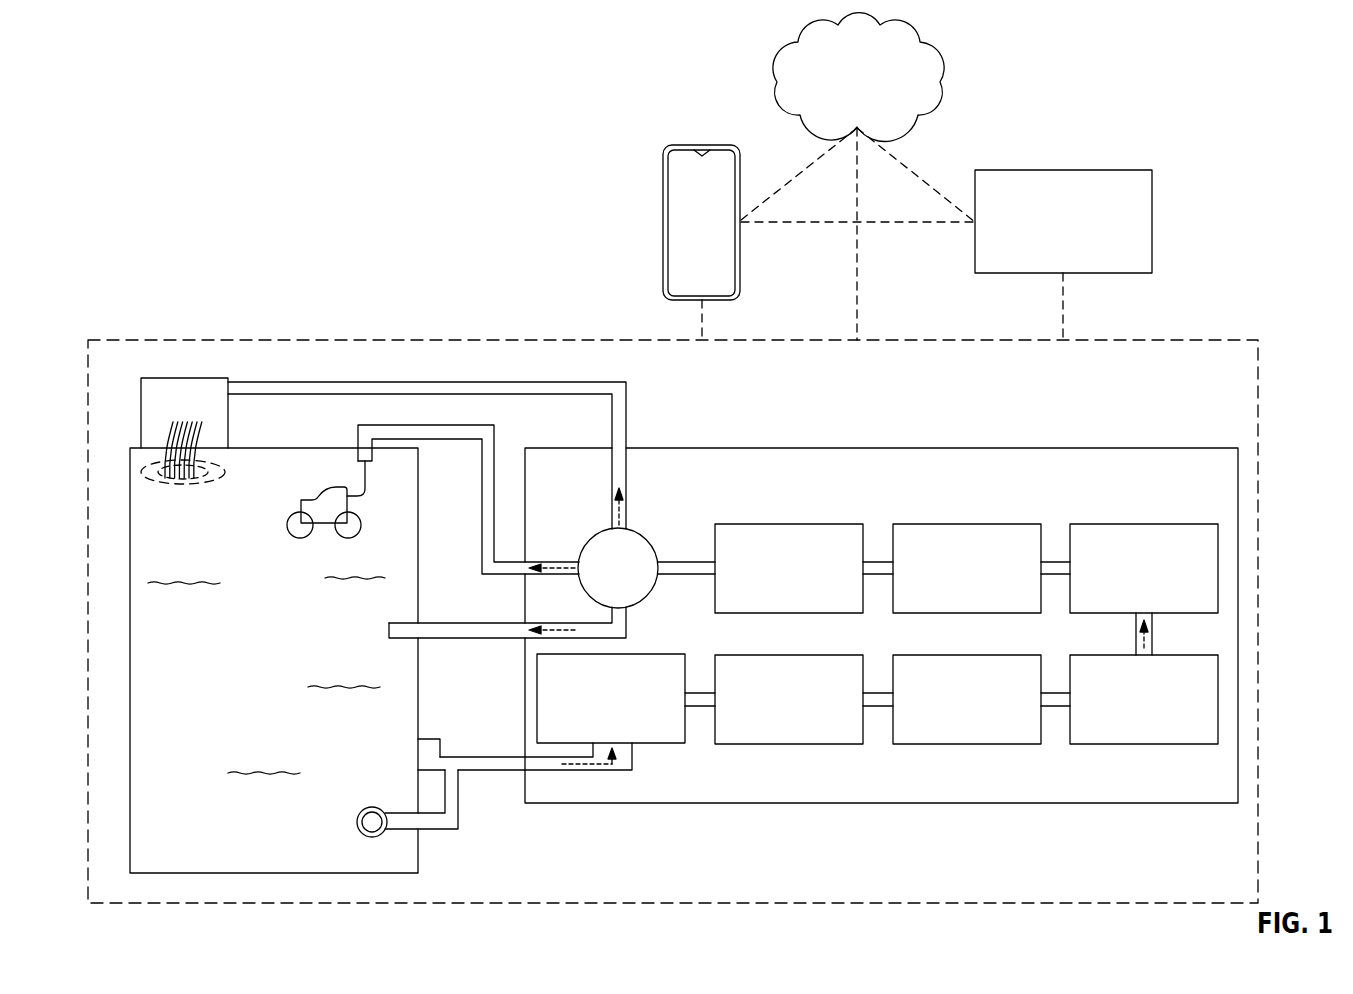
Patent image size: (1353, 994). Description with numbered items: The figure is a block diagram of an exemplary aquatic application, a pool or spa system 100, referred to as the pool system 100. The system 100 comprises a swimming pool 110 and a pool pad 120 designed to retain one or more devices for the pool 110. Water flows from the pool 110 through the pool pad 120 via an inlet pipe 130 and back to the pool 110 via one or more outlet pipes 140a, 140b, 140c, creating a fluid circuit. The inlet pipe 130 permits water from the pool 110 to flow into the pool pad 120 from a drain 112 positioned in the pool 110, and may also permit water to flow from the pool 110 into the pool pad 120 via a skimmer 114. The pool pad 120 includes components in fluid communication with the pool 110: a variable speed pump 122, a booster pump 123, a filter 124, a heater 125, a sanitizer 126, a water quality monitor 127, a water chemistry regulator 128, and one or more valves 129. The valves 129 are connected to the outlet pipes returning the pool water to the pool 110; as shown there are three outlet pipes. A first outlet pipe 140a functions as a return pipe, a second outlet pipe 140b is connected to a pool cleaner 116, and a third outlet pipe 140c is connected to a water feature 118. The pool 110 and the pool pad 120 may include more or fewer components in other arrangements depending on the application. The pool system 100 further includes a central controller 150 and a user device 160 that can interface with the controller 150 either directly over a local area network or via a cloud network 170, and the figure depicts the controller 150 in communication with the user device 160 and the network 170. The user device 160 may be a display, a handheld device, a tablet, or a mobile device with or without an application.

The pool system 100 is at (157, 66).
The swimming pool 110 is at (420, 853).
The drain 112 is at (356, 822).
The skimmer 114 is at (432, 738).
The pool cleaner 116 is at (320, 517).
The water feature 118 is at (188, 500).
The pool pad 120 is at (920, 446).
The variable speed pump 122 is at (589, 712).
The booster pump 123 is at (767, 712).
The filter 124 is at (945, 712).
The heater 125 is at (1122, 712).
The sanitizer 126 is at (1122, 581).
The water quality monitor 127 is at (945, 581).
The water chemistry regulator 128 is at (767, 581).
The valves 129 is at (596, 581).
The inlet pipe 130 is at (450, 812).
The first outlet pipe 140a is at (467, 633).
The second outlet pipe 140b is at (488, 446).
The third outlet pipe 140c is at (618, 430).
The central controller 150 is at (1041, 235).
The user device 160 is at (662, 172).
The cloud network 170 is at (835, 85).